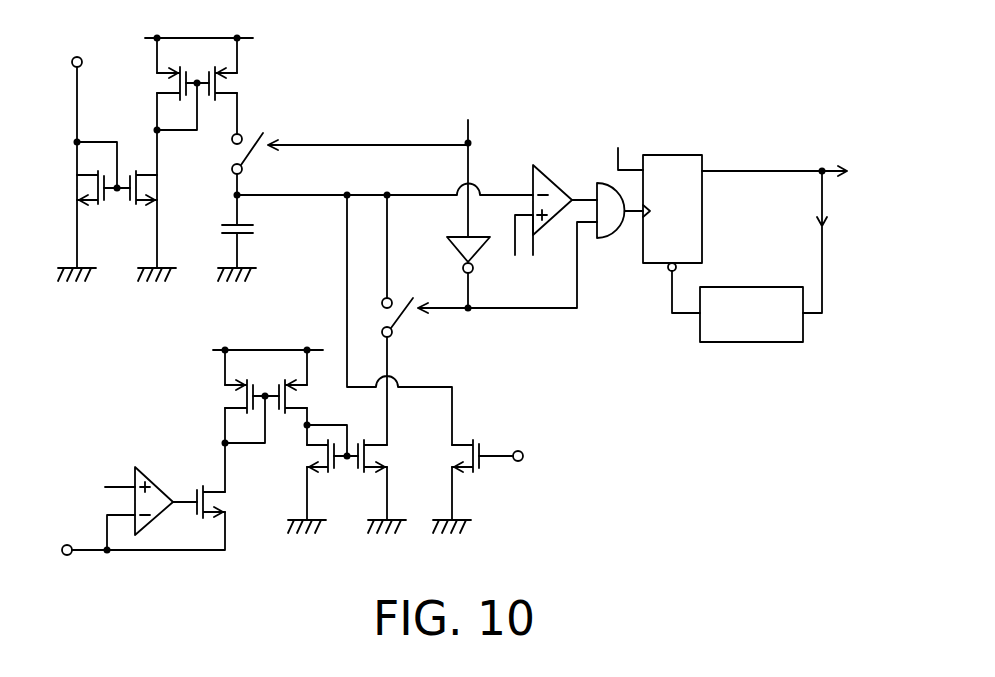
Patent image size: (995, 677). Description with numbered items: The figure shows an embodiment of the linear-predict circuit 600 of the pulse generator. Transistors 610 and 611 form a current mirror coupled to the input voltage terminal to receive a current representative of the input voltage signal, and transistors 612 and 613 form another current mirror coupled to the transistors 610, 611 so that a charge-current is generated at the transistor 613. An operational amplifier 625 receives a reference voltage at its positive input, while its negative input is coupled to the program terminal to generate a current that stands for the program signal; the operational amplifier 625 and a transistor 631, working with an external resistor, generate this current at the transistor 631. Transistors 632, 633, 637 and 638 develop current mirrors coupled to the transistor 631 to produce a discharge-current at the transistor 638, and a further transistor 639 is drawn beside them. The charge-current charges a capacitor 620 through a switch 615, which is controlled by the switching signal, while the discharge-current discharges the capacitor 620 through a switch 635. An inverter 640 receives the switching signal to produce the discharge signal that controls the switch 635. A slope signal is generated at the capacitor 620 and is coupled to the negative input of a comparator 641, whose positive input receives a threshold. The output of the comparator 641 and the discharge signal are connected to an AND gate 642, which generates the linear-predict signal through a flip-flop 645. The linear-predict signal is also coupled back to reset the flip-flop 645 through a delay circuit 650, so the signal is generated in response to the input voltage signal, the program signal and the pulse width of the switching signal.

The linear-predict circuit 600 is at (782, 78).
The transistor 610 is at (66, 188).
The transistor 611 is at (166, 188).
The transistor 612 is at (151, 83).
The transistor 613 is at (245, 83).
The switch 615 is at (248, 134).
The capacitor 620 is at (259, 230).
The operational amplifier 625 is at (163, 493).
The transistor 631 is at (234, 504).
The transistor 632 is at (218, 396).
The transistor 633 is at (282, 384).
The switch 635 is at (411, 299).
The transistor 637 is at (298, 458).
The transistor 638 is at (367, 474).
The transistor 639 is at (480, 473).
The inverter 640 is at (458, 237).
The comparator 641 is at (567, 185).
The AND gate 642 is at (610, 228).
The flip-flop 645 is at (690, 223).
The delay circuit 650 is at (760, 332).